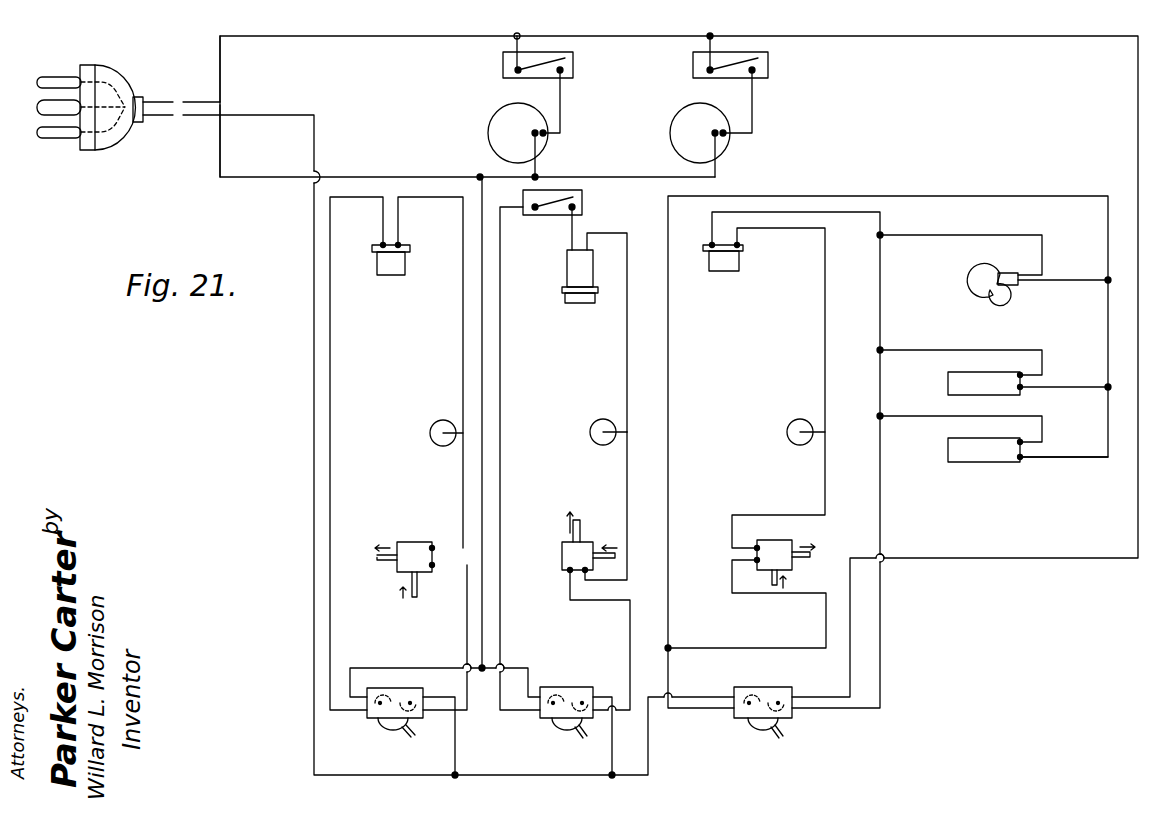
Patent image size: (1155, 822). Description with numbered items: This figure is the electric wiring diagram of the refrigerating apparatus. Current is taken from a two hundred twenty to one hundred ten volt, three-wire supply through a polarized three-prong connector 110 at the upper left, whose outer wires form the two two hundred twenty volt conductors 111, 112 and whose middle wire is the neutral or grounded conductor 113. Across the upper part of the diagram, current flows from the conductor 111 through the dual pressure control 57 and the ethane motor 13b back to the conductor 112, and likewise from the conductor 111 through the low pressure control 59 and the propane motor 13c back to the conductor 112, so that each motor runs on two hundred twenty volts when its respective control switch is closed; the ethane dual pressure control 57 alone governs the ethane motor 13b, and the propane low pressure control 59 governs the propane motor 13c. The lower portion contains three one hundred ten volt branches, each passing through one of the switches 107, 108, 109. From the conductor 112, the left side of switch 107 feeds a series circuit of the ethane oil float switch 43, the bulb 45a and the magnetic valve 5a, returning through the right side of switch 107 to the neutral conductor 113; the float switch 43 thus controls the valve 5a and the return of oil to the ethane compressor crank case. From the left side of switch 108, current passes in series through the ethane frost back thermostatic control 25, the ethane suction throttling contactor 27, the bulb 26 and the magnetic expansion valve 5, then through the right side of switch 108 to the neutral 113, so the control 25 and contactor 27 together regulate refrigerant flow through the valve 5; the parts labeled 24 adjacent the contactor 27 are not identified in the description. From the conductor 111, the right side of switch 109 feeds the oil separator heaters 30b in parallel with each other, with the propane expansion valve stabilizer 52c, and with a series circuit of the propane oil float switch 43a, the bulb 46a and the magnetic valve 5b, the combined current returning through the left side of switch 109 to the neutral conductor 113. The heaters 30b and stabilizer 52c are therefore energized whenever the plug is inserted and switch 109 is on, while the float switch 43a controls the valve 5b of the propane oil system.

The polarized three-prong connector 110 is at (110, 144).
The conductor 111 is at (285, 38).
The conductor 112 is at (222, 139).
The neutral or grounded conductor 113 is at (313, 117).
The dual pressure control 57 is at (575, 66).
The low pressure control 59 is at (770, 65).
The ethane motor 13b is at (498, 110).
The propane motor 13c is at (681, 106).
The ethane frost back thermostatic control 25 is at (583, 197).
The leads 24 is at (570, 250).
The ethane suction throttling contactor 27 is at (568, 272).
The bulb 26 is at (592, 430).
The ethane oil float switch 43 is at (403, 261).
The propane oil float switch 43a is at (735, 260).
The bulb 45a is at (433, 427).
The bulb 46a is at (788, 433).
The magnetic expansion valve 5 is at (563, 543).
The magnetic valve 5a is at (407, 542).
The magnetic valve 5b is at (770, 548).
The propane expansion valve stabilizer 52c is at (975, 263).
The oil separator heaters 30b is at (950, 382).
The switch 107 is at (375, 718).
The switch 108 is at (547, 720).
The switch 109 is at (742, 717).